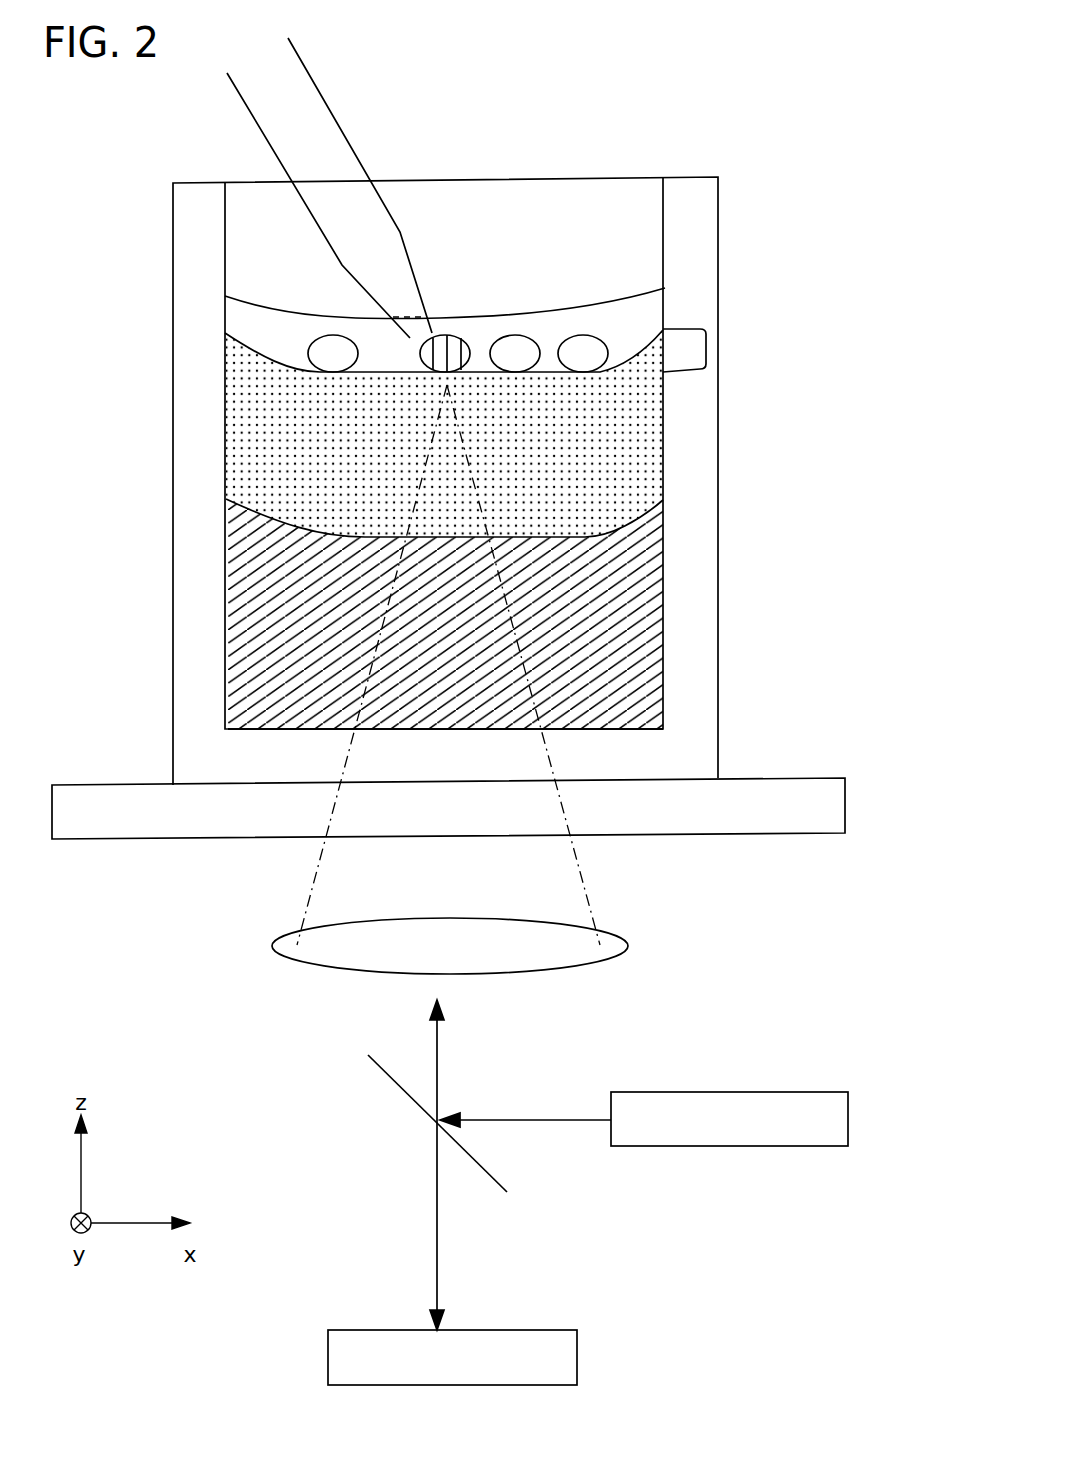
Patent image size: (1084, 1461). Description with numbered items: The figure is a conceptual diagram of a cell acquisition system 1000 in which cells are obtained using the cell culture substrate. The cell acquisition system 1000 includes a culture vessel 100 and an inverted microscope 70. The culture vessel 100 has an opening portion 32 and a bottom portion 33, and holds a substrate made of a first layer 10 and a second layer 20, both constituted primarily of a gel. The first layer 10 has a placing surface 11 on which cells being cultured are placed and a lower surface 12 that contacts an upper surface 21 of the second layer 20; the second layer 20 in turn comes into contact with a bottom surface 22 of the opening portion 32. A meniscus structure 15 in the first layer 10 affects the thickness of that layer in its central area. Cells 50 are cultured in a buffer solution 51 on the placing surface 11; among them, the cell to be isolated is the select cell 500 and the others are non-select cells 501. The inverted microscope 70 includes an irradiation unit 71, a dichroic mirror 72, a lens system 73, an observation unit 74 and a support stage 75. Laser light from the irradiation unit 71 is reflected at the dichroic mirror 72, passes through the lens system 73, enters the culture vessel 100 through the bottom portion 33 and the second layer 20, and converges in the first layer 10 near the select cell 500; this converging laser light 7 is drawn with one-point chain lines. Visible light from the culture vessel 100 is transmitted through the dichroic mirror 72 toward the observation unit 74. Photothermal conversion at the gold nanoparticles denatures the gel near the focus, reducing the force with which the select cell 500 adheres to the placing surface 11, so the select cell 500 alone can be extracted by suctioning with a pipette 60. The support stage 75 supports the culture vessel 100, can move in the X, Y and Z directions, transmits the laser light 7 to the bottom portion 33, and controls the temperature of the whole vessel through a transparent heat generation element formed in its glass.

The cell acquisition system 1000 is at (772, 143).
The culture vessel 100 is at (810, 162).
The inverted microscope 70 is at (848, 778).
The pipette 60 is at (350, 168).
The cells 50 is at (455, 127).
The select cell 500 is at (449, 358).
The non-select cells 501 is at (583, 345).
The opening portion 32 is at (660, 205).
The bottom portion 33 is at (622, 756).
The buffer solution 51 is at (250, 338).
The placing surface 11 is at (377, 372).
The lower surface 12 is at (227, 499).
The upper surface 21 is at (444, 518).
The first layer 10 is at (653, 478).
The second layer 20 is at (653, 628).
The bottom surface 22 is at (268, 730).
The meniscus structure 15 is at (706, 349).
The support stage 75 is at (127, 828).
The laser light 7 is at (310, 918).
The lens system 73 is at (353, 962).
The dichroic mirror 72 is at (383, 1070).
The irradiation unit 71 is at (677, 1092).
The observation unit 74 is at (355, 1330).